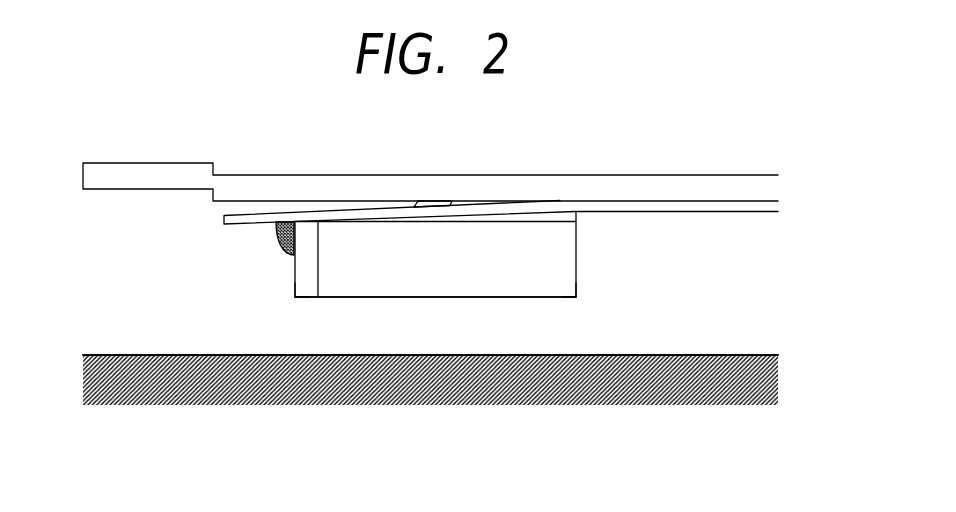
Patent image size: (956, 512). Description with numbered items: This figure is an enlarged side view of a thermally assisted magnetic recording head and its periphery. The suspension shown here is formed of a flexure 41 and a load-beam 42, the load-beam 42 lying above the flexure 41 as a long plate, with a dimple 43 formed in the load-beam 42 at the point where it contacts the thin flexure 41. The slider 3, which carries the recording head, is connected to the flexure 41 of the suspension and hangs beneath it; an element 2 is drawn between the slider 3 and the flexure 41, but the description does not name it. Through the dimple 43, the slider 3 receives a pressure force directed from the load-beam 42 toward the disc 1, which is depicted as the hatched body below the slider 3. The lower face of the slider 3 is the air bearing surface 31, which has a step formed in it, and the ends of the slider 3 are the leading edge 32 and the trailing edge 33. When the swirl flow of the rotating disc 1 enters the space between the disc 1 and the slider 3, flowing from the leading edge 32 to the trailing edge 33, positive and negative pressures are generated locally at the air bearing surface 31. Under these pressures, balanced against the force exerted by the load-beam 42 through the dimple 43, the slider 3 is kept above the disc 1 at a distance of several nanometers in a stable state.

The disc 1 is at (436, 399).
The bonding member 2 is at (300, 268).
The slider 3 is at (565, 253).
The air bearing surface 31 is at (493, 297).
The leading edge 32 is at (576, 297).
The trailing edge 33 is at (295, 297).
The flexure 41 is at (718, 212).
The load-beam 42 is at (582, 183).
The dimple 43 is at (429, 202).